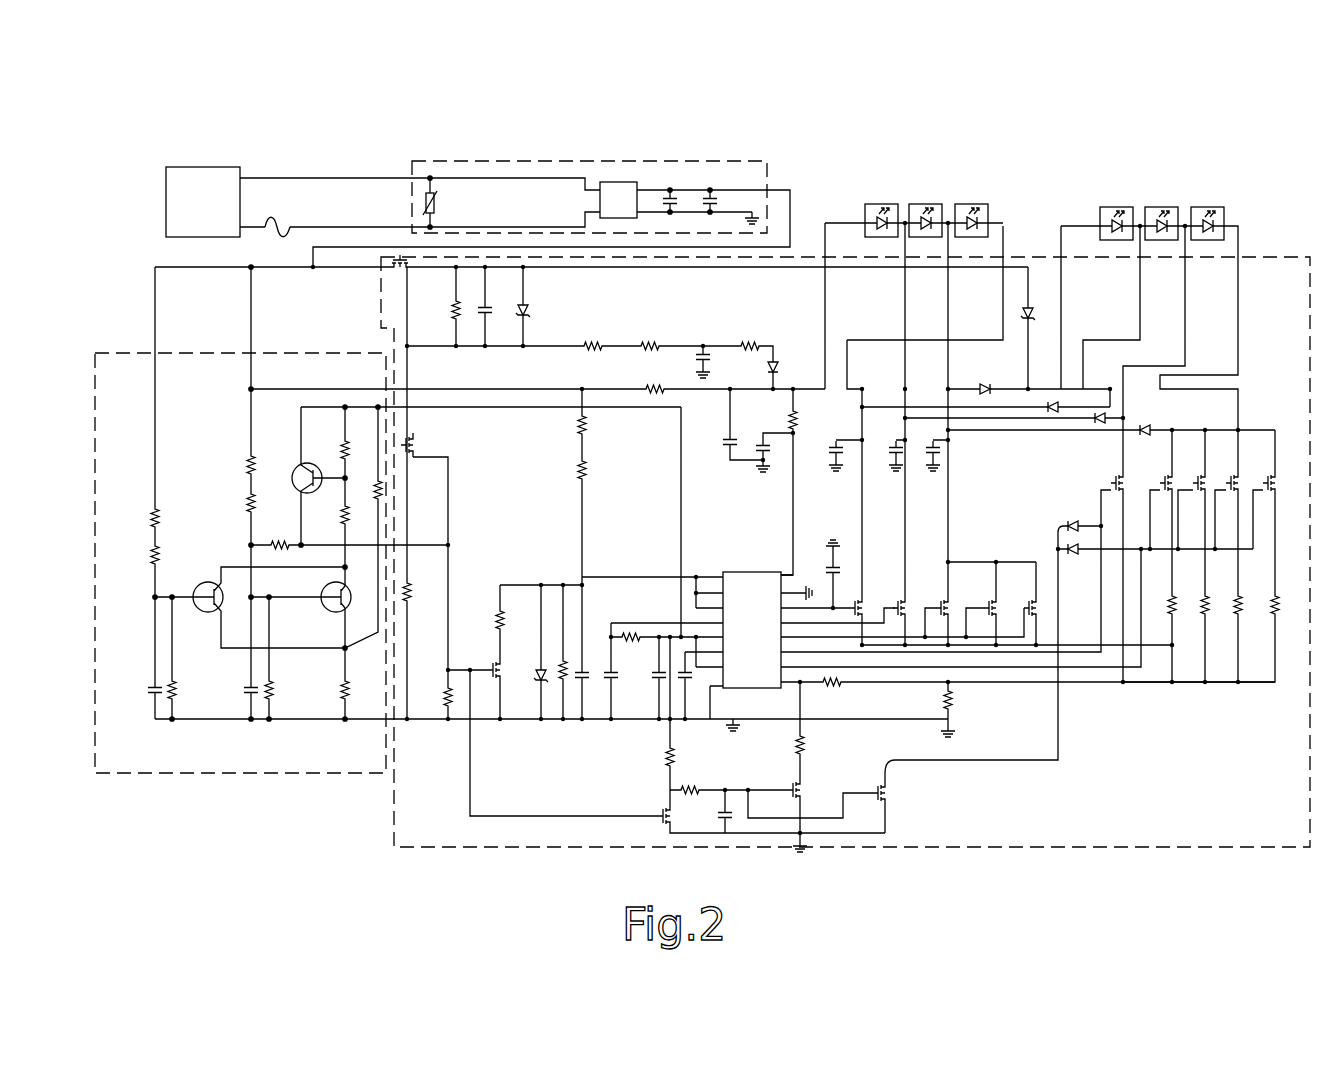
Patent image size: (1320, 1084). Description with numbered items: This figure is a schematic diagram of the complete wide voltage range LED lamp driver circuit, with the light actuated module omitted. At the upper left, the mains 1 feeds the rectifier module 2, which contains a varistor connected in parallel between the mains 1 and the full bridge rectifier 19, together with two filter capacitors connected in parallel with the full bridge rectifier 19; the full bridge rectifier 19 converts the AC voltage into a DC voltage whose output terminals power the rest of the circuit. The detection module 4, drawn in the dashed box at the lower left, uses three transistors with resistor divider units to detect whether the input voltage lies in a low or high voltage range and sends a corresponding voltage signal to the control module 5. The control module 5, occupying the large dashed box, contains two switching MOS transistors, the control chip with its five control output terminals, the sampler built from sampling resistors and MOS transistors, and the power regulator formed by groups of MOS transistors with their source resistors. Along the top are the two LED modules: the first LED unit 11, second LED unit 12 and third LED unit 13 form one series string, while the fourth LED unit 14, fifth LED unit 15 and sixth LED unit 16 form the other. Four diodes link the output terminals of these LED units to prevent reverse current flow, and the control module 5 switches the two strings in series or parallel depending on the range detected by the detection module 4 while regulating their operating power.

The mains 1 is at (200, 166).
The rectifier module 2 is at (412, 162).
The full bridge rectifier 19 is at (620, 182).
The detection module 4 is at (210, 774).
The control module 5 is at (873, 855).
The first LED unit 11 is at (870, 204).
The second LED unit 12 is at (926, 204).
The third LED unit 13 is at (980, 204).
The fourth LED unit 14 is at (1110, 207).
The fifth LED unit 15 is at (1165, 207).
The sixth LED unit 16 is at (1212, 207).